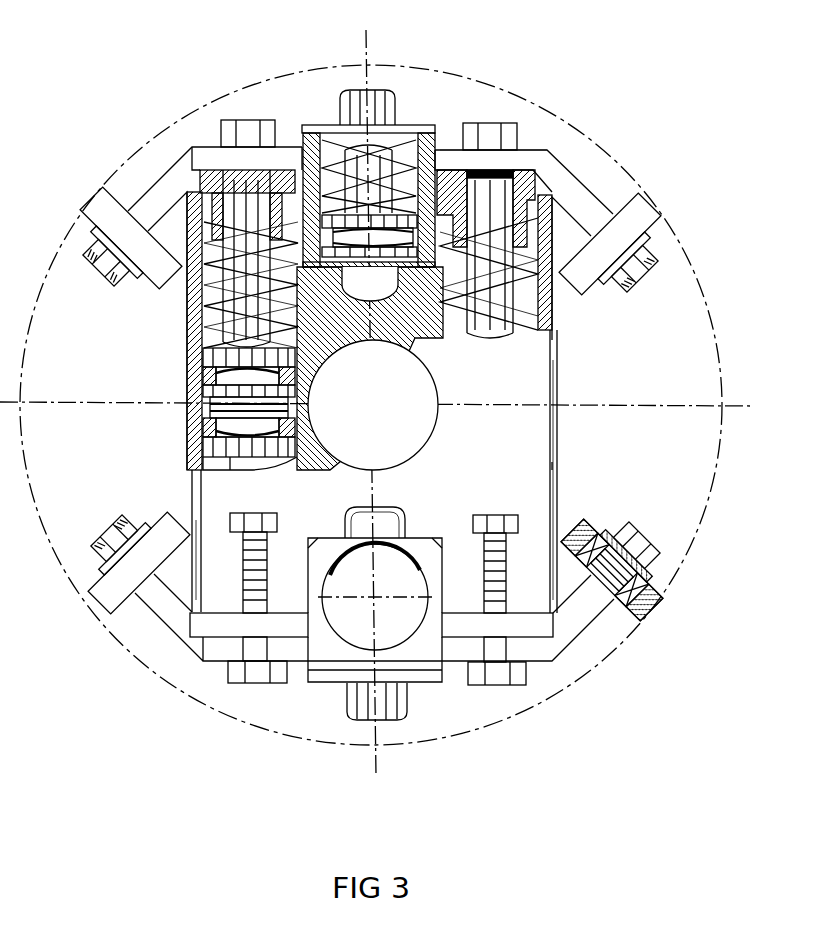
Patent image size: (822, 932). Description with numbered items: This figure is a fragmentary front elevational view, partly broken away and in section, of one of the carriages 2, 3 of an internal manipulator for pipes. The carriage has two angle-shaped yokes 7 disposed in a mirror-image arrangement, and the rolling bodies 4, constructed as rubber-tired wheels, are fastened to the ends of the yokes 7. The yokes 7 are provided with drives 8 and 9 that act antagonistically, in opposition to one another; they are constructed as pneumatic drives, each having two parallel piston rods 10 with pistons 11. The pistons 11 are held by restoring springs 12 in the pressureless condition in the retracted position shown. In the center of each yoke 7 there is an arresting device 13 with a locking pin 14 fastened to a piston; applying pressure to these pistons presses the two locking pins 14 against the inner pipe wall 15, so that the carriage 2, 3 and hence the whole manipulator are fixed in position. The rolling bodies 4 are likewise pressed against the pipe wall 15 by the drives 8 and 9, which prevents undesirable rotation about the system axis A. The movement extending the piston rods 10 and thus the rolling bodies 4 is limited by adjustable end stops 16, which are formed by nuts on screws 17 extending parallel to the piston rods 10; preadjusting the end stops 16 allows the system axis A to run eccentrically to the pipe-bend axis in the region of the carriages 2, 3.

The carriage 2 is at (550, 462).
The carriage 3 is at (500, 116).
The rolling bodies 4 is at (98, 207).
The angle-shaped yokes 7 is at (570, 192).
The drive 8 is at (185, 338).
The drive 9 is at (188, 436).
The piston rods 10 is at (225, 174).
The pistons 11 is at (205, 356).
The restoring springs 12 is at (221, 286).
The arresting device 13 is at (424, 104).
The locking pin 14 is at (348, 113).
The inner pipe wall 15 is at (718, 354).
The adjustable end stops 16 is at (232, 520).
The screws 17 is at (244, 590).
The system axis A is at (375, 405).